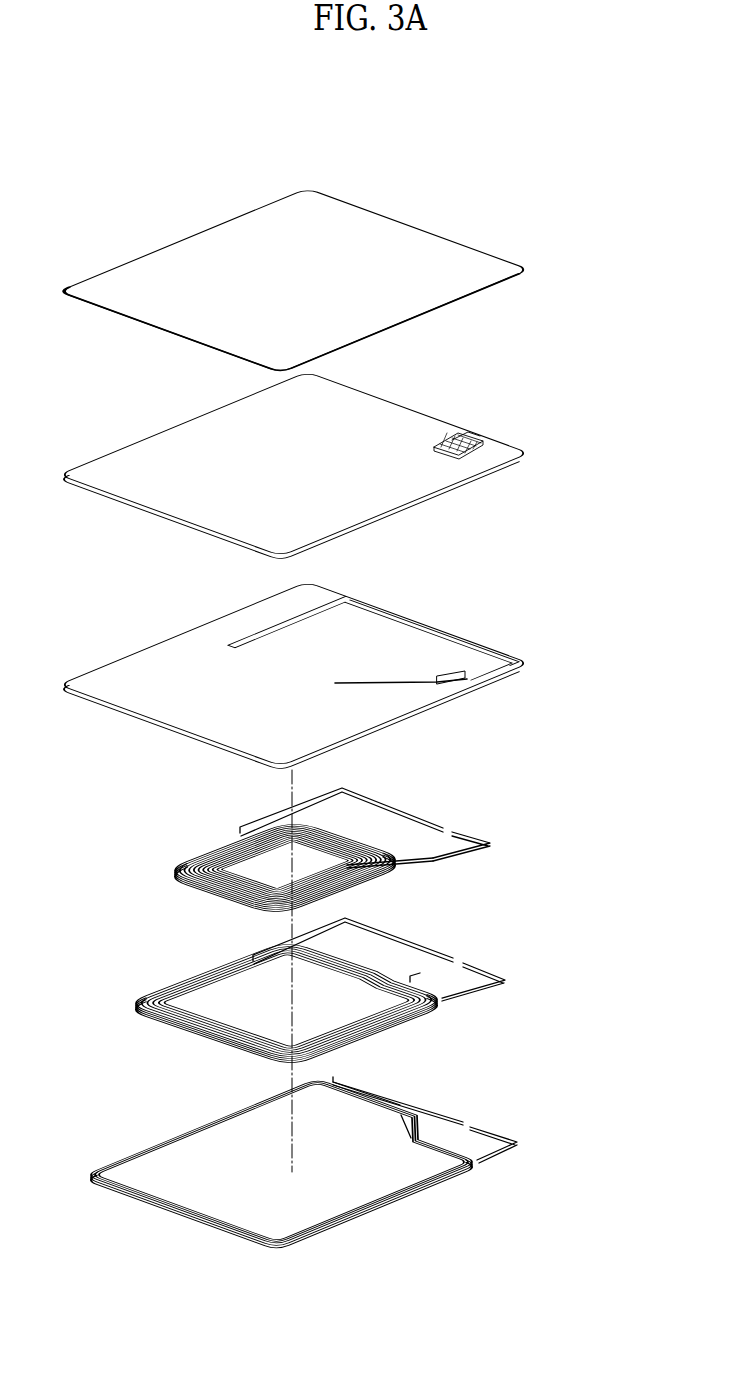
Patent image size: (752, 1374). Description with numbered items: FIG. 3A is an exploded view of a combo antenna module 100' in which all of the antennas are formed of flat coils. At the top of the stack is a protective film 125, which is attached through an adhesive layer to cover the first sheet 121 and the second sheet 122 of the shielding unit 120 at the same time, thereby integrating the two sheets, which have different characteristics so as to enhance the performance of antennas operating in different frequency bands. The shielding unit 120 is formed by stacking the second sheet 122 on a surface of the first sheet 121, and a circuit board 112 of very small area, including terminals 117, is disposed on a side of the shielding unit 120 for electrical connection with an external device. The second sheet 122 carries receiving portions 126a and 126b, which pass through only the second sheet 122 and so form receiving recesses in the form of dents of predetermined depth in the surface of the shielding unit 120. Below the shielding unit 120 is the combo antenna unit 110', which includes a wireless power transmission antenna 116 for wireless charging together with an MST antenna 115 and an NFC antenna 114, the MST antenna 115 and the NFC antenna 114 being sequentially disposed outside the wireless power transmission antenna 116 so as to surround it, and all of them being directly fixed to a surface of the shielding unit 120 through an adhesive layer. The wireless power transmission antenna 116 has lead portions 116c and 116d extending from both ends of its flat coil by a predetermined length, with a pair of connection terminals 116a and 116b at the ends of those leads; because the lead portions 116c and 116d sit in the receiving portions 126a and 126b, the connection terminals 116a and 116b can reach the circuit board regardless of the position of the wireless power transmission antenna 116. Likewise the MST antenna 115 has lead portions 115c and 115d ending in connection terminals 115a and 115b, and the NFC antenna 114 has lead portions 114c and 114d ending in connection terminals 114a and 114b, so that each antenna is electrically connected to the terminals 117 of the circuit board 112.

The combo antenna module 100' is at (368, 687).
The protective film 125 is at (444, 250).
The shielding unit 120 is at (600, 546).
The first sheet 121 is at (478, 468).
The second sheet 122 is at (325, 658).
The circuit board 112 is at (453, 436).
The terminals 117 is at (468, 437).
The receiving portion 126a is at (307, 622).
The receiving portion 126b is at (453, 683).
The combo antenna unit 110' is at (381, 996).
The wireless power transmission antenna 116 is at (363, 824).
The connection terminal 116a is at (443, 825).
The connection terminal 116b is at (452, 832).
The lead portion 116c is at (366, 797).
The lead portion 116d is at (472, 855).
The MST antenna 115 is at (355, 979).
The connection terminal 115a is at (453, 956).
The connection terminal 115b is at (462, 963).
The lead portion 115c is at (393, 937).
The lead portion 115d is at (483, 993).
The NFC antenna 114 is at (331, 1153).
The connection terminal 114a is at (465, 1117).
The connection terminal 114b is at (473, 1127).
The lead portion 114c is at (400, 1093).
The lead portion 114d is at (493, 1157).